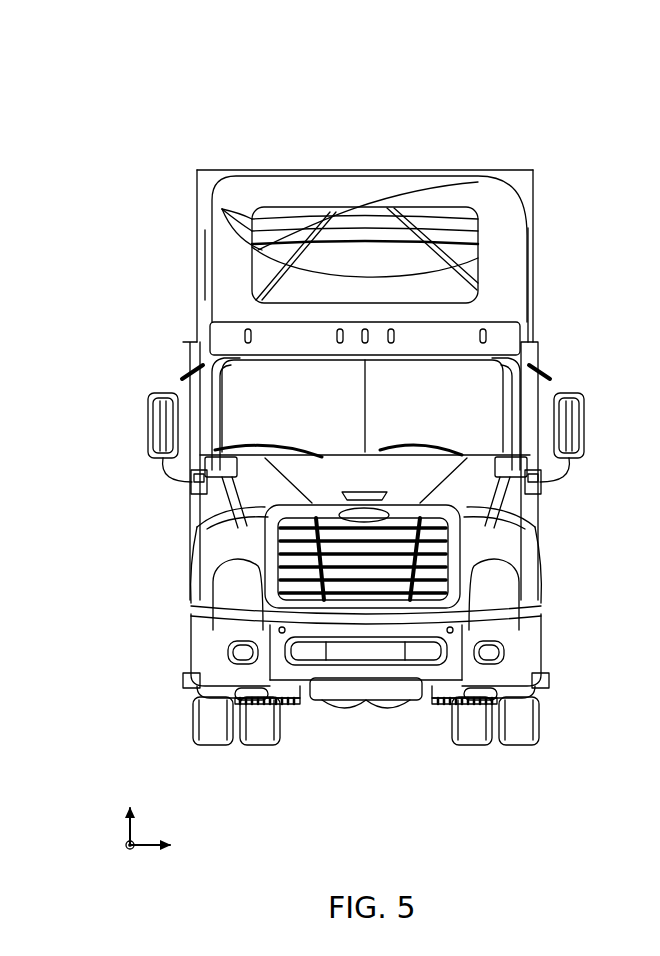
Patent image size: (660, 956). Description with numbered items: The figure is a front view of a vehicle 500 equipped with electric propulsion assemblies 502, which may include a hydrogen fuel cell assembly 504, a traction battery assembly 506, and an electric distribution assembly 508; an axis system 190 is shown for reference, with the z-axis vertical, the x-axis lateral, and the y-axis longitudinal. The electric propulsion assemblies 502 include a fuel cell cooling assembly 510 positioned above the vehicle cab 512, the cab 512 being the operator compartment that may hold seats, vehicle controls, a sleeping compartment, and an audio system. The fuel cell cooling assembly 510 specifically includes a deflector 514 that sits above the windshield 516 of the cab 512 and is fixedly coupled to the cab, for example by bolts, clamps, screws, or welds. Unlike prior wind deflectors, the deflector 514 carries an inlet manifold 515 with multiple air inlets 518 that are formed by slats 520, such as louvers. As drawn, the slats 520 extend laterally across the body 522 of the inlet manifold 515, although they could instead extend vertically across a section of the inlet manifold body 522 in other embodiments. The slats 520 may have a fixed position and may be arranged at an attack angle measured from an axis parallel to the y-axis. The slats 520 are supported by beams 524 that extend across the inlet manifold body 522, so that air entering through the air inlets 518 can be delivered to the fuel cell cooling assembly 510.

The vehicle 500 is at (130, 76).
The electric propulsion assemblies 502 is at (131, 131).
The hydrogen fuel cell assembly 504 is at (343, 112).
The traction battery assembly 506 is at (331, 722).
The electric distribution assembly 508 is at (573, 646).
The fuel cell cooling assembly 510 is at (378, 139).
The vehicle cab 512 is at (548, 366).
The deflector 514 is at (512, 267).
The inlet manifold 515 is at (298, 206).
The windshield 516 is at (428, 372).
The air inlets 518 is at (237, 217).
The slats 520 is at (349, 248).
The inlet manifold body 522 is at (243, 281).
The beams 524 is at (388, 205).
The axis system 190 is at (157, 807).